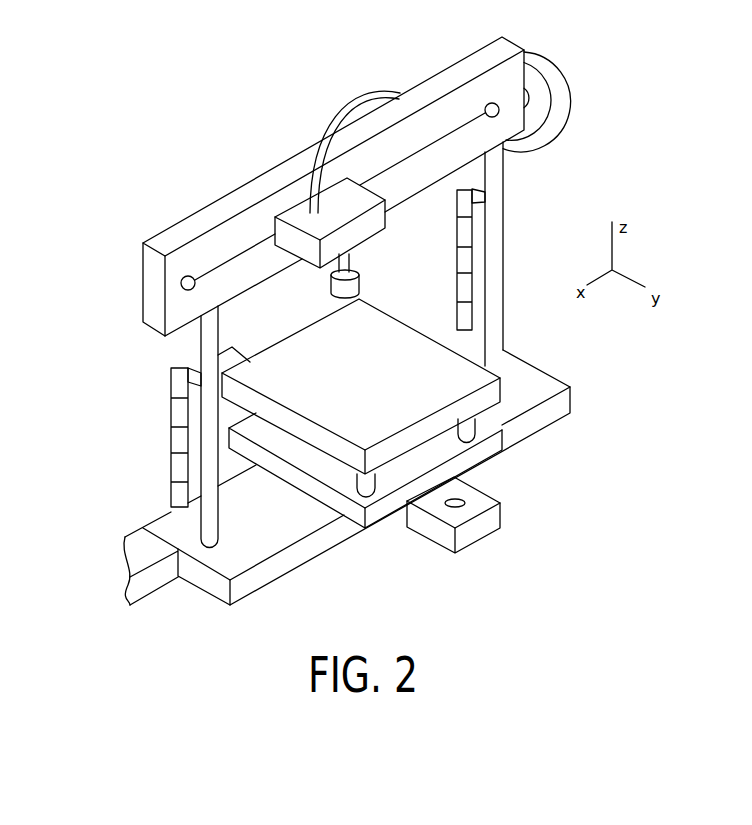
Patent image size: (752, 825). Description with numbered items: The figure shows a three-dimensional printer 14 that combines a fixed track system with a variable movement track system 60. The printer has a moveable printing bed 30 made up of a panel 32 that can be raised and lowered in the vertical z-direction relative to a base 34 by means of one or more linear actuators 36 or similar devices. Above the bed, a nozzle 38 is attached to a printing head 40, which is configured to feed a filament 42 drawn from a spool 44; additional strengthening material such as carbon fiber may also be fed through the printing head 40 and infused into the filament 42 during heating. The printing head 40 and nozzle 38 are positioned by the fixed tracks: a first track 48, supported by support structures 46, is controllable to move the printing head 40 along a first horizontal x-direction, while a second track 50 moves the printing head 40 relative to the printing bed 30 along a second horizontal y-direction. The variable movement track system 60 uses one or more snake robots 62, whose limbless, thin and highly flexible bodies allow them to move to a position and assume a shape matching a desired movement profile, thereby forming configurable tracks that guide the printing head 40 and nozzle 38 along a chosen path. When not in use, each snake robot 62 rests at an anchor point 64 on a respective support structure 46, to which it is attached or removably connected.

The 3D printer 14 is at (243, 102).
The moveable printing bed 30 is at (328, 480).
The panel 32 is at (418, 343).
The base 34 is at (456, 468).
The linear actuators 36 is at (477, 427).
The nozzle 38 is at (359, 283).
The printing head 40 is at (343, 206).
The filament 42 is at (351, 102).
The spool 44 is at (559, 100).
The support structures 46 is at (498, 295).
The first track 48 is at (182, 287).
The second track 50 is at (463, 506).
The variable movement track system 60 is at (112, 442).
The snake robots 62 is at (171, 469).
The anchor point 64 is at (190, 374).